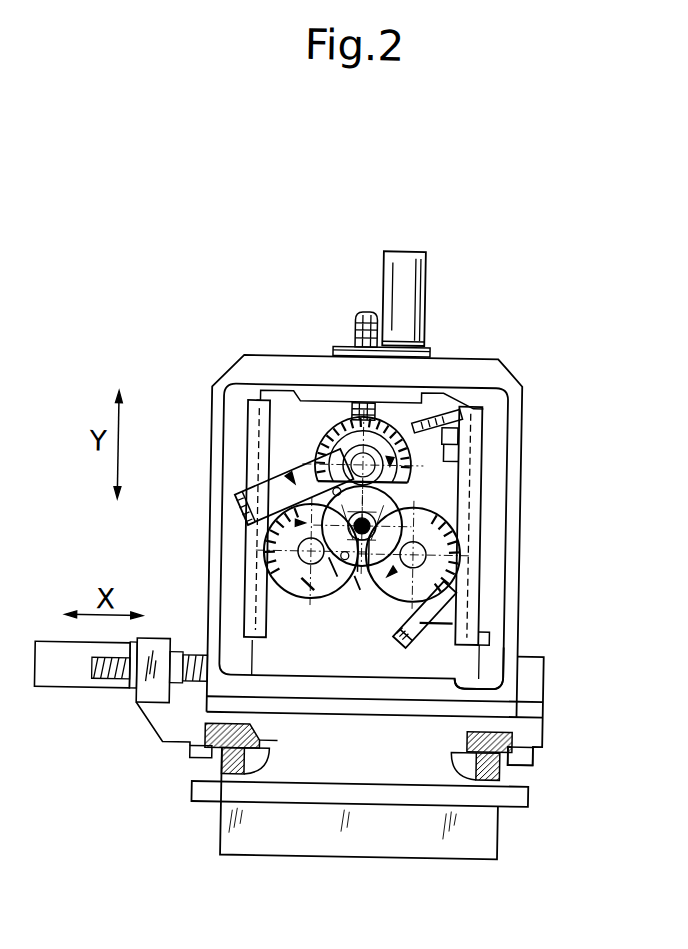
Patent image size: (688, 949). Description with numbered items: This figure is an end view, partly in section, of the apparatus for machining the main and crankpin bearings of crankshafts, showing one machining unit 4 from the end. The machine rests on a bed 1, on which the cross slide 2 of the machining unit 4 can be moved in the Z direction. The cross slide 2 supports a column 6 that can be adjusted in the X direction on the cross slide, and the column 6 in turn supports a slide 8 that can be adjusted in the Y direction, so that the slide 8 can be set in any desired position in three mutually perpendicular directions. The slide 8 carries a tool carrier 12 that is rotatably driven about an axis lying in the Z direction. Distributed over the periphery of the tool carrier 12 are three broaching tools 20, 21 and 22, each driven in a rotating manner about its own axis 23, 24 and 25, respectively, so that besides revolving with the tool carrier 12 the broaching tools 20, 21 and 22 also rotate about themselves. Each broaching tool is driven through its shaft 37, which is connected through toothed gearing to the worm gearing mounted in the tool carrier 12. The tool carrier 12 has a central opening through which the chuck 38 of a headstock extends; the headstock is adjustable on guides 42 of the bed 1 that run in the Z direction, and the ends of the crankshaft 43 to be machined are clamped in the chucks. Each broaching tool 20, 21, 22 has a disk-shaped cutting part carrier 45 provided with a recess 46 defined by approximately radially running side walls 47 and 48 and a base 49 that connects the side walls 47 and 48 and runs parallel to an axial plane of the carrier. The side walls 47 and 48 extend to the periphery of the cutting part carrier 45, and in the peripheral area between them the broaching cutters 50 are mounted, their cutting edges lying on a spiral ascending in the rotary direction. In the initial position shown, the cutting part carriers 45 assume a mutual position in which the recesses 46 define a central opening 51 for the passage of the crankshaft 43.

The bed 1 is at (482, 830).
The cross slide 2 is at (532, 709).
The machining unit 4 is at (296, 244).
The column 6 is at (243, 375).
The slide 8 is at (450, 454).
The tool carrier 12 is at (290, 481).
The broaching tool 20 is at (444, 436).
The broaching tool 21 is at (434, 549).
The broaching tool 22 is at (299, 549).
The axis 23 is at (356, 462).
The axis 24 is at (465, 586).
The axis 25 is at (307, 557).
The shaft 37 is at (393, 428).
The chuck 38 is at (390, 512).
The guide 42 is at (190, 755).
The crankshaft 43 is at (344, 555).
The cutting part carrier 45 is at (468, 651).
The recess 46 is at (332, 564).
The side wall 47 is at (375, 525).
The side wall 48 is at (414, 595).
The base 49 is at (484, 633).
The broaching cutters 50 is at (380, 400).
The central opening 51 is at (333, 496).